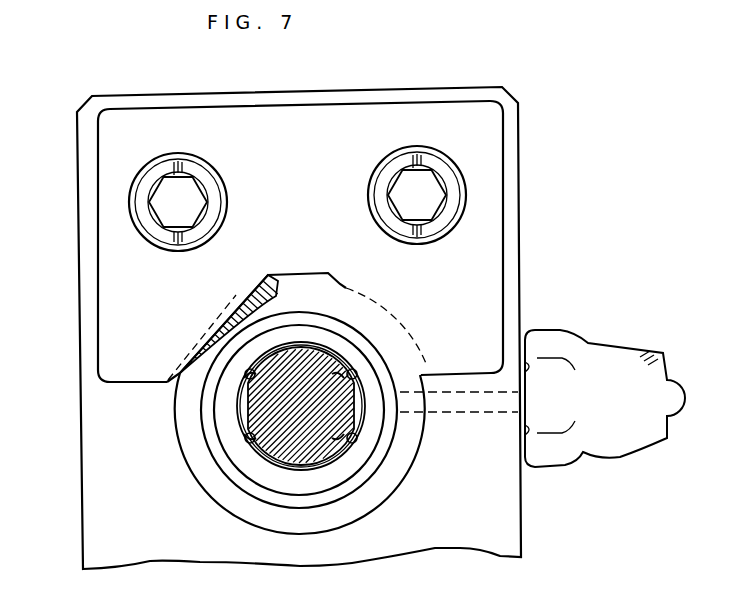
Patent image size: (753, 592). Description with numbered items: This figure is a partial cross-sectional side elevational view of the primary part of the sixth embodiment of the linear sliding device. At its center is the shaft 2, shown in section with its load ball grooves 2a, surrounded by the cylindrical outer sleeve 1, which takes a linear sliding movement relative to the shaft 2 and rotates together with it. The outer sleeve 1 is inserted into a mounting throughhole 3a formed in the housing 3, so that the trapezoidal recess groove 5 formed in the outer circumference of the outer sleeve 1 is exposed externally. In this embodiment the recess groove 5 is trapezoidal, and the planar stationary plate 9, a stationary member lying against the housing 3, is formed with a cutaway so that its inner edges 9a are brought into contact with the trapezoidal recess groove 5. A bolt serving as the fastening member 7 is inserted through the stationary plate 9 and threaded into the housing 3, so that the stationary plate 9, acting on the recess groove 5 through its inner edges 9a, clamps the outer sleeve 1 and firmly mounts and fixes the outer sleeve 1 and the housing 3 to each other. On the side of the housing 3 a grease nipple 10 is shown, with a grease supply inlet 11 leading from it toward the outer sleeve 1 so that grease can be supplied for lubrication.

The outer sleeve 1 is at (198, 473).
The shaft 2 is at (352, 437).
The load ball grooves 2a is at (246, 379).
The housing 3 is at (88, 391).
The mounting throughhole 3a is at (213, 500).
The trapezoidal recess groove 5 is at (208, 328).
The fastening member 7 is at (133, 209).
The planar stationary plate 9 is at (100, 163).
The inner edges 9a is at (230, 305).
The grease nipple 10 is at (595, 350).
The grease supply inlet 11 is at (445, 413).